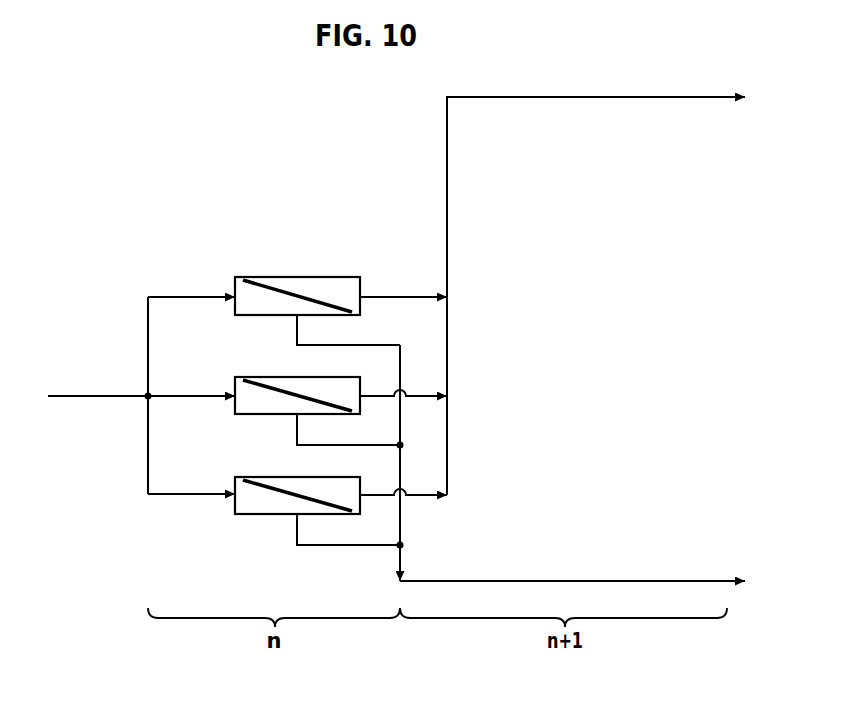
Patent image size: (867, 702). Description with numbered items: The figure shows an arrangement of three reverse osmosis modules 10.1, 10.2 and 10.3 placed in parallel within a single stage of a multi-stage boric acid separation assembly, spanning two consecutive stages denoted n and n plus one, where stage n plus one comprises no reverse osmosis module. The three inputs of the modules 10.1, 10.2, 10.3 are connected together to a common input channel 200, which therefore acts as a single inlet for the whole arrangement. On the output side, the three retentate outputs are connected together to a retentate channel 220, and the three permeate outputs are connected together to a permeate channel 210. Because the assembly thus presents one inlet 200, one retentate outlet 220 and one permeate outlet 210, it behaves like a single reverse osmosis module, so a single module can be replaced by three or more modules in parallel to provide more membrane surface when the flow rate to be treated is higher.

The reverse osmosis module 10.1 is at (298, 277).
The reverse osmosis module 10.2 is at (298, 377).
The reverse osmosis module 10.3 is at (298, 477).
The input channel 200 is at (97, 393).
The permeate channel 210 is at (602, 95).
The retentate channel 220 is at (603, 580).